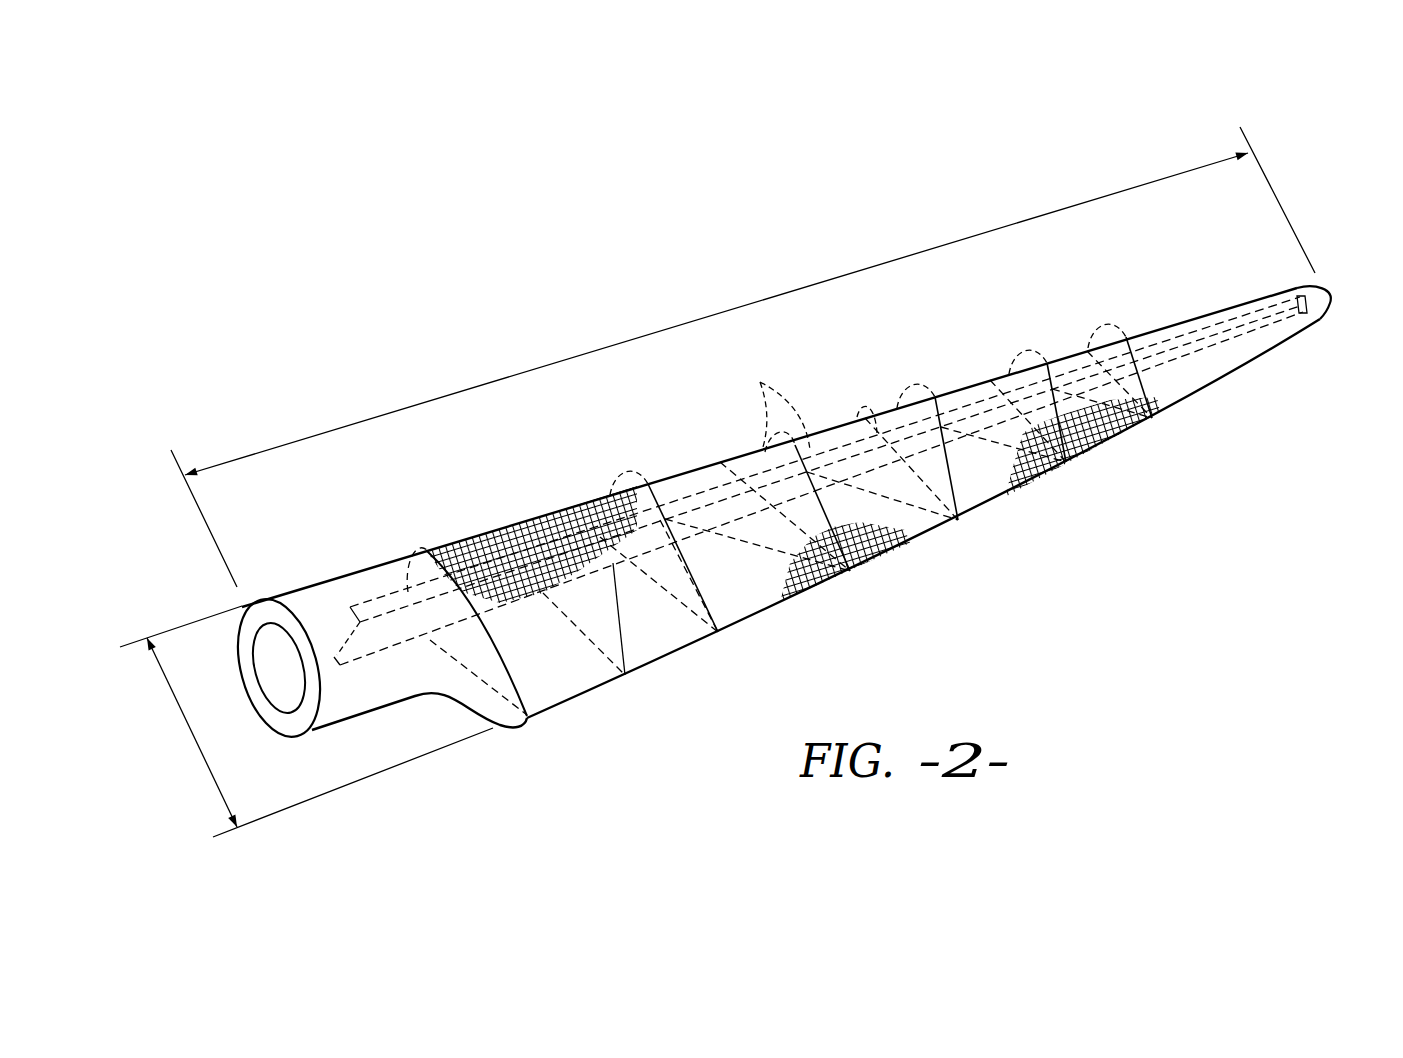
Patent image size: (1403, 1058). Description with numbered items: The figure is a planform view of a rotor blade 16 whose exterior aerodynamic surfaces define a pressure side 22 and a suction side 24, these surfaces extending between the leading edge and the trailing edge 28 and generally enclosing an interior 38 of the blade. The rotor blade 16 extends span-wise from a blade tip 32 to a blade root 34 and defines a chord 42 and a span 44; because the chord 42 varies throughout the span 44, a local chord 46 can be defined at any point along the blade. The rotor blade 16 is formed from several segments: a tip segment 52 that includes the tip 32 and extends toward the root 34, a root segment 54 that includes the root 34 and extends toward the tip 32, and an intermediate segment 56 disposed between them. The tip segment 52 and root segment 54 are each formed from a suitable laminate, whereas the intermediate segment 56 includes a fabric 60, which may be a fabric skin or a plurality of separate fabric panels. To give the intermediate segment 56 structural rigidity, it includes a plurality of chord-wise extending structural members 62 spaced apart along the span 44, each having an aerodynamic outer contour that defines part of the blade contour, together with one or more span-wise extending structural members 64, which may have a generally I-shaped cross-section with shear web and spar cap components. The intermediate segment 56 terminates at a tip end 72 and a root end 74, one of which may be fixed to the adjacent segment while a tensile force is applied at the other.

The rotor blade 16 is at (328, 361).
The pressure side 22 is at (560, 658).
The suction side 24 is at (680, 472).
The trailing edge 28 is at (763, 614).
The blade tip 32 is at (1329, 289).
The blade root 34 is at (232, 638).
The interior 38 is at (640, 628).
The chord 42 is at (185, 720).
The span 44 is at (770, 297).
The local chord 46 is at (952, 494).
The tip segment 52 is at (1213, 358).
The root segment 54 is at (353, 693).
The intermediate segment 56 is at (926, 546).
The fabric 60 is at (845, 574).
The chord-wise extending structural member 62 is at (787, 467).
The span-wise extending structural member 64 is at (983, 380).
The tip end 72 is at (1150, 388).
The root end 74 is at (507, 673).